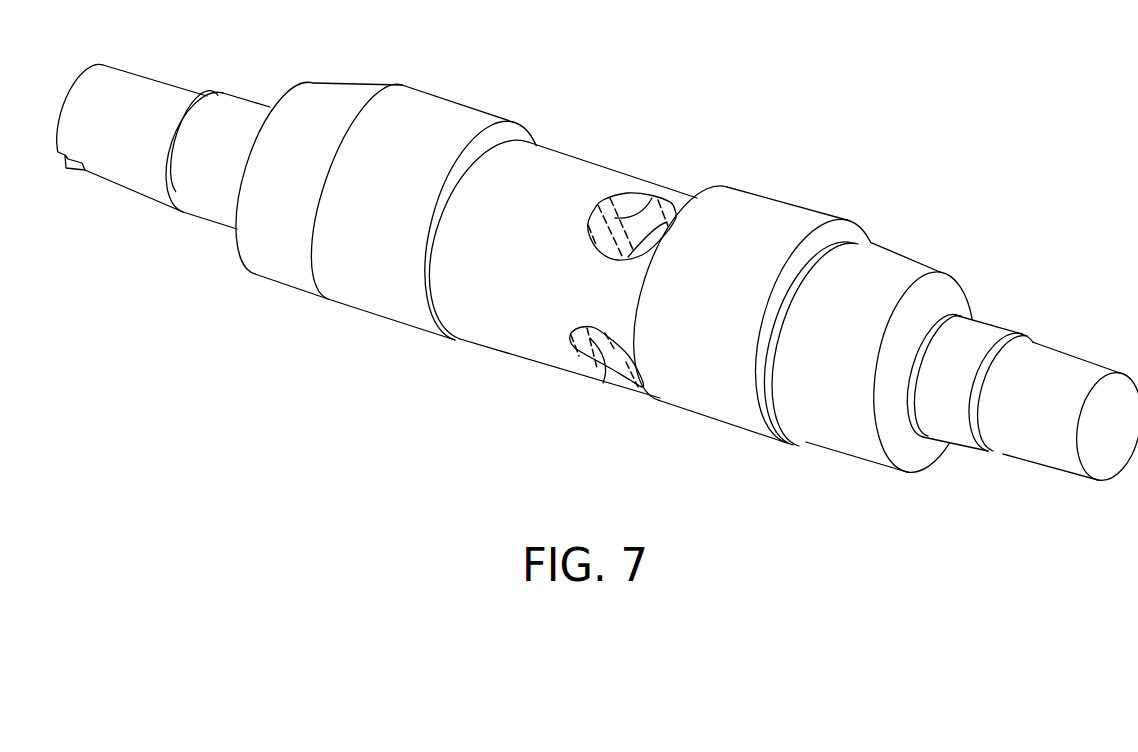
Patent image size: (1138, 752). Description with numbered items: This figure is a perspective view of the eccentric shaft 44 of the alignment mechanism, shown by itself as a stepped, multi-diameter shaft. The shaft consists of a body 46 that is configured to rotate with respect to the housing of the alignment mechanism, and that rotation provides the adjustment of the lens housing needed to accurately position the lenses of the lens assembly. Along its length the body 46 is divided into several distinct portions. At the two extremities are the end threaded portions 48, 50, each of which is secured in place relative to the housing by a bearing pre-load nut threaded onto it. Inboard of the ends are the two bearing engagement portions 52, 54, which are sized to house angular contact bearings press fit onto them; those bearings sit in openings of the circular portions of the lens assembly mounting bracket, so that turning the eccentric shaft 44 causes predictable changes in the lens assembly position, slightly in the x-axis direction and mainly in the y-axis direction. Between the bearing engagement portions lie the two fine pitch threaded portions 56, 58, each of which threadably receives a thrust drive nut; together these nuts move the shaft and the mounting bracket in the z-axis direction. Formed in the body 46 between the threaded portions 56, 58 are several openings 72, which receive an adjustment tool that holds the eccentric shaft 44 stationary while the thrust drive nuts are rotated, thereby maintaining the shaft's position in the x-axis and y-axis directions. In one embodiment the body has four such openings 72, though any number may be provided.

The eccentric shaft 44 is at (597, 244).
The body 46 is at (512, 322).
The end threaded portion 48 is at (1075, 373).
The end threaded portion 50 is at (136, 90).
The bearing engagement portion 52 is at (995, 337).
The bearing engagement portion 54 is at (233, 110).
The fine pitch threaded portion 56 is at (893, 273).
The fine pitch threaded portion 58 is at (331, 98).
The opening 72 is at (650, 193).